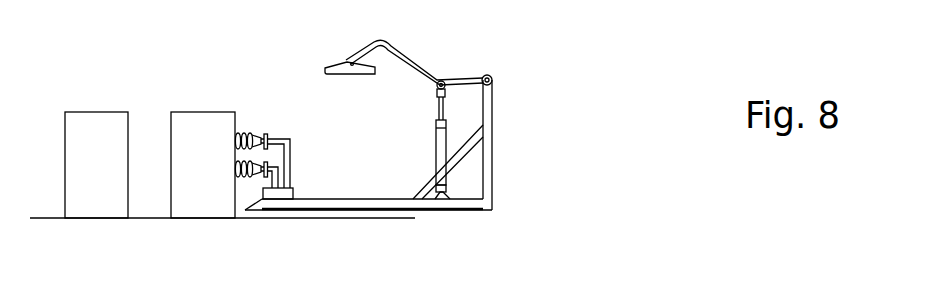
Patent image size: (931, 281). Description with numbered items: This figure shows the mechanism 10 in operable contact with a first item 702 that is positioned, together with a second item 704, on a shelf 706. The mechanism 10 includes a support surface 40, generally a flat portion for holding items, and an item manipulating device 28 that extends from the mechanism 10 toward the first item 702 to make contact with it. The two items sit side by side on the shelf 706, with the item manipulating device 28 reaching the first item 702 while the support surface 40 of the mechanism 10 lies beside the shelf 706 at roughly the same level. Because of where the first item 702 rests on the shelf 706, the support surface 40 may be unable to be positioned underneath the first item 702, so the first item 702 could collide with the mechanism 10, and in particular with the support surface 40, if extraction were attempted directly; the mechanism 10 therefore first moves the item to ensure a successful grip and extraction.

The mechanism 10 is at (495, 98).
The item manipulating device 28 is at (265, 138).
The support surface 40 is at (377, 205).
The first item 702 is at (184, 176).
The second item 704 is at (78, 176).
The shelf 706 is at (265, 218).